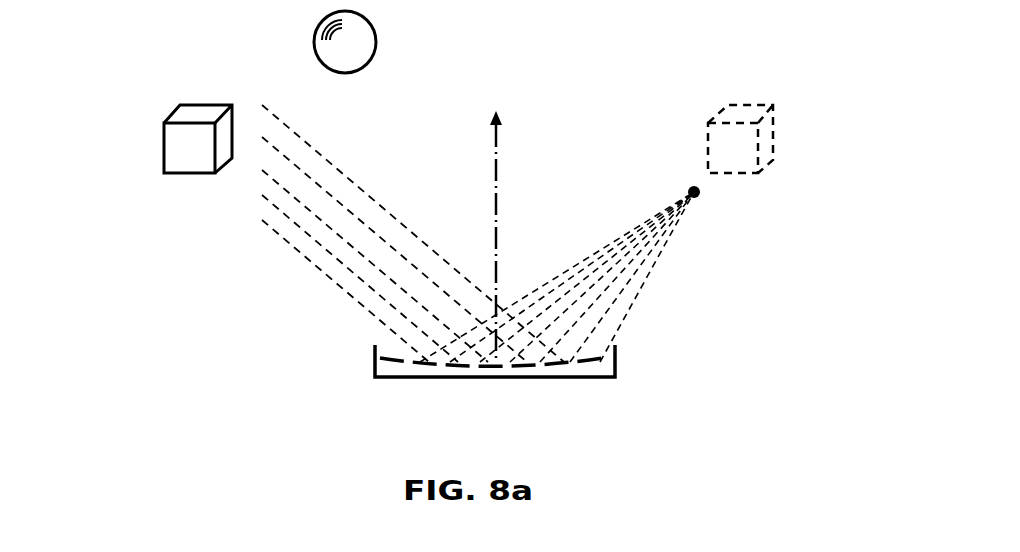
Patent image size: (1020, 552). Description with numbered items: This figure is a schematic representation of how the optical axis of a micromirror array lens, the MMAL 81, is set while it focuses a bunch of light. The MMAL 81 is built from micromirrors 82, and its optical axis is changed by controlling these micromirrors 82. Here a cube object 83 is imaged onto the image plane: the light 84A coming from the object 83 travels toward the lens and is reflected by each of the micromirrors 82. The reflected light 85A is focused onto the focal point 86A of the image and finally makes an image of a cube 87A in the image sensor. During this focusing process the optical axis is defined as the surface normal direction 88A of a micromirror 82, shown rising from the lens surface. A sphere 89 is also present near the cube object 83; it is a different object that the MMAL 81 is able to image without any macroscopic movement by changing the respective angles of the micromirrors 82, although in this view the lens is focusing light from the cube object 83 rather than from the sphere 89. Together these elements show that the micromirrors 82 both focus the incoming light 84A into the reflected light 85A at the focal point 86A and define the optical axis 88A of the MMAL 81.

The sphere object 89 is at (378, 38).
The cube object 83 is at (160, 147).
The light from the object 84A is at (295, 260).
The surface normal direction of a micromirror 88A is at (503, 160).
The reflected light 85A is at (642, 295).
The focal point 86A is at (702, 198).
The image of a cube 87A is at (778, 135).
The micromirror array lens (MMAL) 81 is at (367, 362).
The micromirrors 82 is at (615, 378).